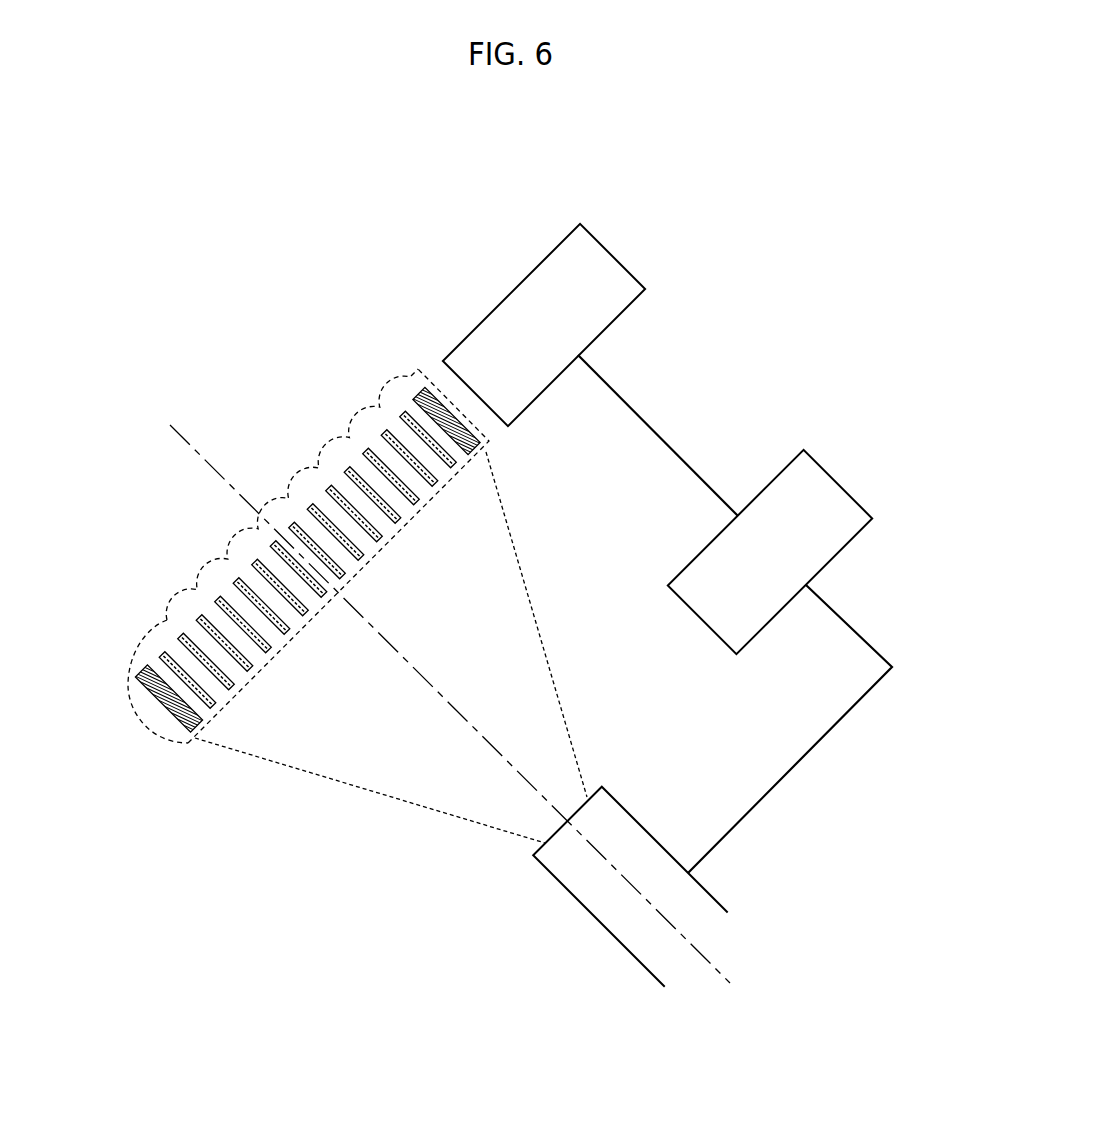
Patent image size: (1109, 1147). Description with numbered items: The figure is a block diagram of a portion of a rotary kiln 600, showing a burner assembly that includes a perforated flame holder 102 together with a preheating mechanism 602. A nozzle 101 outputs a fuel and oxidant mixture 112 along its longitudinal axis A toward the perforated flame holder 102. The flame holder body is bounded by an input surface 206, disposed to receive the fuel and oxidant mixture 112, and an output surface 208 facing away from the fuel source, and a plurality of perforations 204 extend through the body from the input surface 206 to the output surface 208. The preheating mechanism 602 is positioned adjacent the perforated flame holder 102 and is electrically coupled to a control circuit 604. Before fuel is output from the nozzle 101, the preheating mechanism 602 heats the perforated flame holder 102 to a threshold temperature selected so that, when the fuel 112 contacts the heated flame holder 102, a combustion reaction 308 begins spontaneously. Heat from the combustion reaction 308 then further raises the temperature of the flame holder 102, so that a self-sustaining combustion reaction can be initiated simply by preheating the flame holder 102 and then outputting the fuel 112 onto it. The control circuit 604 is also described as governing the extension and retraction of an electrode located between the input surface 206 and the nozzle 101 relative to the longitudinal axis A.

The rotary kiln 600 is at (670, 195).
The preheating mechanism 602 is at (645, 288).
The control circuit 604 is at (872, 518).
The nozzle 101 is at (728, 913).
The perforated flame holder 102 is at (137, 678).
The fuel and oxidant mixture 112 is at (545, 656).
The perforations 204 is at (319, 495).
The input surface 206 is at (278, 657).
The output surface 208 is at (166, 620).
The combustion reaction 308 is at (400, 383).
The longitudinal axis A is at (413, 669).